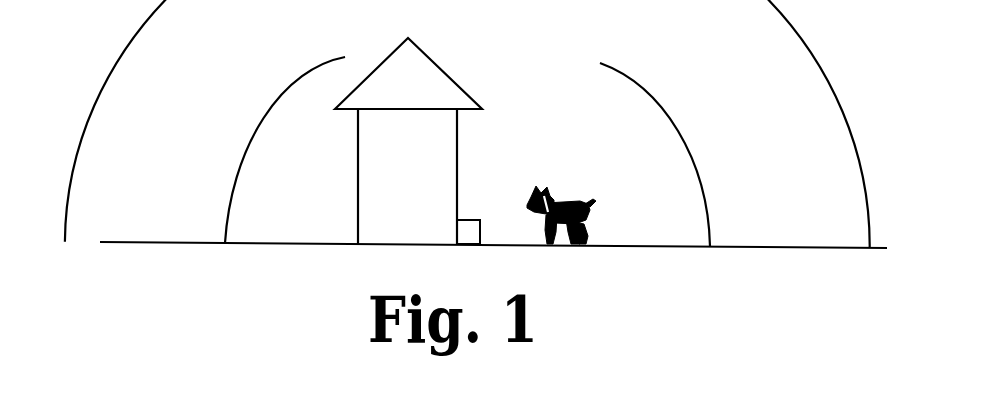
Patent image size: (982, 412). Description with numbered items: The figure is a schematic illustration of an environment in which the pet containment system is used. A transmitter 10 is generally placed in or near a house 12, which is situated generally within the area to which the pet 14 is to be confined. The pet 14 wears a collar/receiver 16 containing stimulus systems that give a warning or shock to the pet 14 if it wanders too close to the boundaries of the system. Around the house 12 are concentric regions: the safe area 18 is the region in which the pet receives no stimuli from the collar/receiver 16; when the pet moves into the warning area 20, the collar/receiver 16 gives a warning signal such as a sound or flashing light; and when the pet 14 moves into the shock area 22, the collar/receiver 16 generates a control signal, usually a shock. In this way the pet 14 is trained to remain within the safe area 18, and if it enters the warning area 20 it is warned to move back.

The transmitter 10 is at (468, 233).
The house 12 is at (395, 183).
The pet 14 is at (582, 206).
The collar/receiver 16 is at (553, 203).
The safe area 18 is at (299, 195).
The warning area 20 is at (753, 188).
The shock area 22 is at (849, 54).